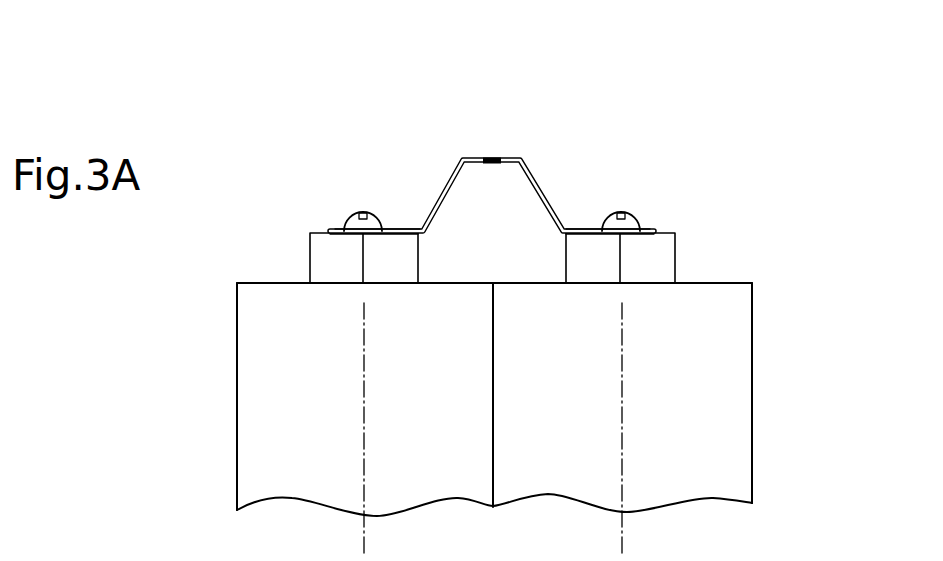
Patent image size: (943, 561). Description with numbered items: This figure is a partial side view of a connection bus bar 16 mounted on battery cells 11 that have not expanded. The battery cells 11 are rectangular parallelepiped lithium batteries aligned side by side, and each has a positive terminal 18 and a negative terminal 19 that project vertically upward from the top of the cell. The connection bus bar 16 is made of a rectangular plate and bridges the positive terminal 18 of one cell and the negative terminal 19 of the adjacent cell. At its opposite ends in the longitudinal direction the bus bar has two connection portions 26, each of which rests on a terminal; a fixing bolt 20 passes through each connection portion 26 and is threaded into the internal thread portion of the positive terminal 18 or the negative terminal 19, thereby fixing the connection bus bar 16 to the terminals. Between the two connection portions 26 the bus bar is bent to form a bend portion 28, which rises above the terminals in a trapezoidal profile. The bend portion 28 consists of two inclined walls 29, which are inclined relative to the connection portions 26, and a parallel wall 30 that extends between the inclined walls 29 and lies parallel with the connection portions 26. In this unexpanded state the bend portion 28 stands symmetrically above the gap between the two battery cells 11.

The substrate / base body 11 is at (237, 372).
The terminal connection assembly 16 is at (492, 125).
The left electrode block 18 is at (310, 254).
The right electrode block 19 is at (675, 257).
The solder bump 20 is at (350, 222).
The bonding layer 26 is at (392, 227).
The connecting strip 28 is at (492, 156).
The flat portion of strip 29 is at (433, 208).
The notch in strip top 30 is at (508, 166).